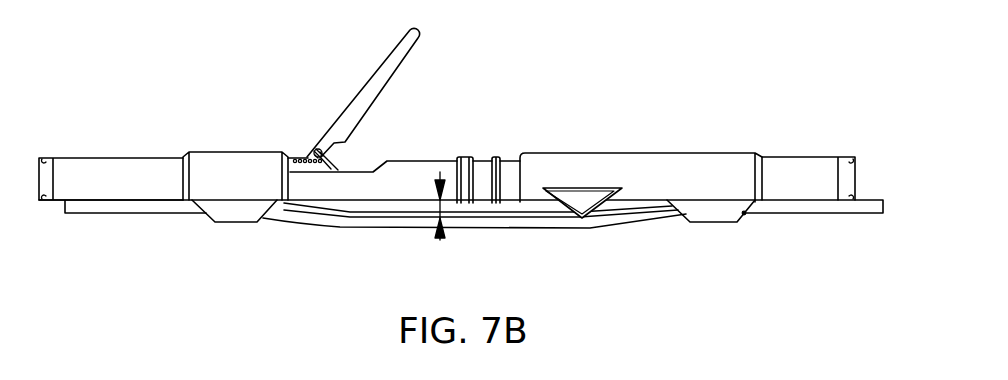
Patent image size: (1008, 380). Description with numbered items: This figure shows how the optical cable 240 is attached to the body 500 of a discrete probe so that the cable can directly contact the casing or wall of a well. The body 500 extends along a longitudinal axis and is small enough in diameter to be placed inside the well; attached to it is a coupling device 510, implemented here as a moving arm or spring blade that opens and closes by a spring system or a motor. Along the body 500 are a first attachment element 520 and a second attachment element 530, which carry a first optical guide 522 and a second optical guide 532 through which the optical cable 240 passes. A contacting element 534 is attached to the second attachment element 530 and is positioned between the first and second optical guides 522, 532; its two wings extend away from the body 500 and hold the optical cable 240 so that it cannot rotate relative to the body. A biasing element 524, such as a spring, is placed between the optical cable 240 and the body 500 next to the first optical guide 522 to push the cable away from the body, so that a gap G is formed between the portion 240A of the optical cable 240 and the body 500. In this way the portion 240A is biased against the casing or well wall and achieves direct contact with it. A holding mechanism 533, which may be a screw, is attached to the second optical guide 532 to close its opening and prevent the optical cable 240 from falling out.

The optical cable 240 is at (127, 213).
The portion of the optical cable 240A is at (410, 230).
The body 500 is at (440, 160).
The coupling device 510 is at (362, 90).
The first attachment element 520 is at (226, 152).
The first optical guide 522 is at (236, 222).
The biasing element 524 is at (338, 215).
The second attachment element 530 is at (640, 153).
The second optical guide 532 is at (715, 222).
The holding mechanism 533 is at (742, 215).
The contacting element 534 is at (593, 250).
The gap G is at (443, 205).